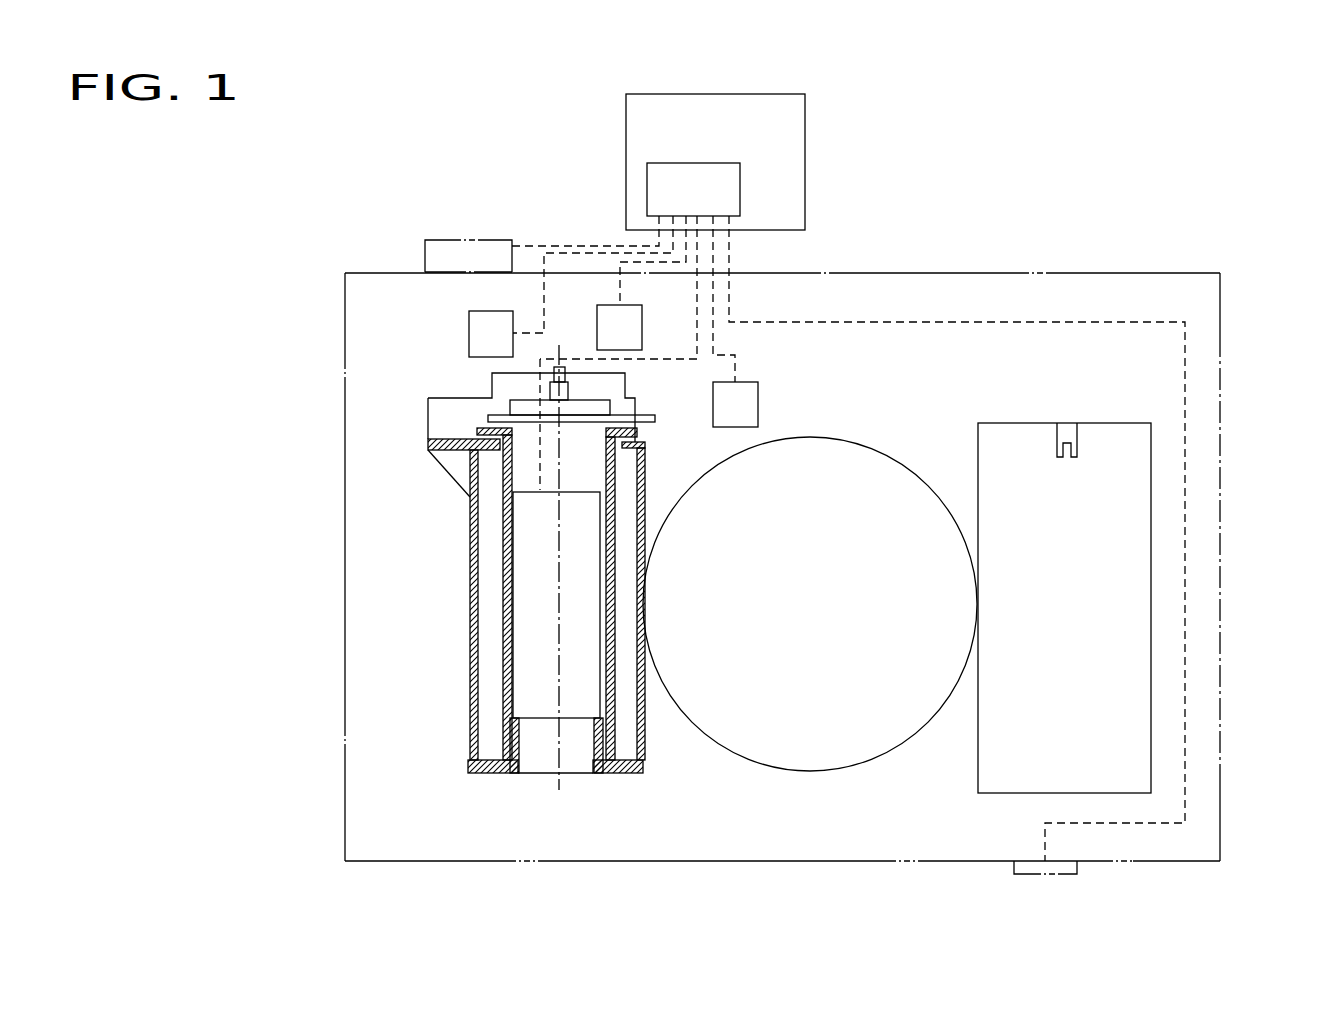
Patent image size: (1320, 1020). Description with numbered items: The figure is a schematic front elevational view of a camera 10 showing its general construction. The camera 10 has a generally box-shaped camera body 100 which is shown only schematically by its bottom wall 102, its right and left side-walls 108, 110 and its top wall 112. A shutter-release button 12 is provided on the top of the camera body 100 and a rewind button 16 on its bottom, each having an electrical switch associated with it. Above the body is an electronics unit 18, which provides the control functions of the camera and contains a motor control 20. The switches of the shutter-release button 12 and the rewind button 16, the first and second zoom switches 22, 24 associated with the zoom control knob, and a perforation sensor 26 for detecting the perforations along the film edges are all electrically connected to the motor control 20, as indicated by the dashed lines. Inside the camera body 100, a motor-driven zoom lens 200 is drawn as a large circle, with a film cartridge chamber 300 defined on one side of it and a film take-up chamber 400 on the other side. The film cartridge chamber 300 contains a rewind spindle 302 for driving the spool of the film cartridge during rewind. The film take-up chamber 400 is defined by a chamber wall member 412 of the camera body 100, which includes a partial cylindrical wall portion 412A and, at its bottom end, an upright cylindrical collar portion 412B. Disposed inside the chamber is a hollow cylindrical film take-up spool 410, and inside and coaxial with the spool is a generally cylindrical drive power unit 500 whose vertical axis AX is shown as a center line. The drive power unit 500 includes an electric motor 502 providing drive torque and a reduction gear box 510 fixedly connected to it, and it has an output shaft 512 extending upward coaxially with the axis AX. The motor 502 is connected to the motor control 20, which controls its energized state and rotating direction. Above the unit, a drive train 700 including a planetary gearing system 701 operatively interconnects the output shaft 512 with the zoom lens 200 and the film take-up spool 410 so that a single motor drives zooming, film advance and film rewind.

The camera 10 is at (1075, 215).
The camera body 100 is at (1182, 288).
The bottom wall 102 is at (1188, 862).
The right side-wall 108 is at (345, 718).
The left side-wall 110 is at (1221, 722).
The top wall 112 is at (928, 272).
The shutter-release button 12 is at (473, 248).
The rewind button 16 is at (1031, 870).
The electronics unit 18 is at (741, 146).
The motor control 20 is at (740, 190).
The first zoom switch 22 is at (473, 330).
The second zoom switch 24 is at (600, 330).
The perforation sensor 26 is at (752, 400).
The motor-driven zoom lens 200 is at (887, 452).
The film cartridge chamber 300 is at (1130, 585).
The rewind spindle 302 is at (1057, 440).
The film take-up chamber 400 is at (482, 532).
The film take-up spool 410 is at (500, 585).
The chamber wall member 412 is at (468, 700).
The partial cylindrical wall portion 412A is at (468, 730).
The cylindrical collar portion 412B is at (520, 740).
The drive power unit 500 is at (768, 548).
The electric motor 502 is at (585, 612).
The reduction gear box 510 is at (595, 466).
The output shaft 512 is at (568, 392).
The drive train 700 is at (440, 378).
The planetary gearing system 701 is at (657, 400).
The axis AX is at (557, 651).